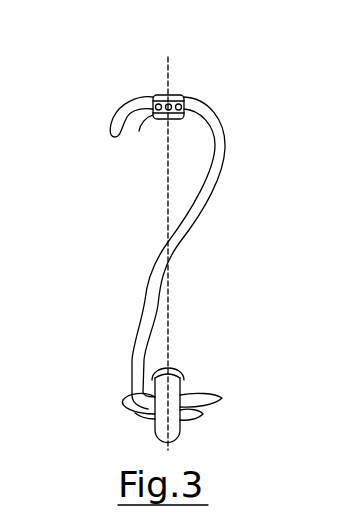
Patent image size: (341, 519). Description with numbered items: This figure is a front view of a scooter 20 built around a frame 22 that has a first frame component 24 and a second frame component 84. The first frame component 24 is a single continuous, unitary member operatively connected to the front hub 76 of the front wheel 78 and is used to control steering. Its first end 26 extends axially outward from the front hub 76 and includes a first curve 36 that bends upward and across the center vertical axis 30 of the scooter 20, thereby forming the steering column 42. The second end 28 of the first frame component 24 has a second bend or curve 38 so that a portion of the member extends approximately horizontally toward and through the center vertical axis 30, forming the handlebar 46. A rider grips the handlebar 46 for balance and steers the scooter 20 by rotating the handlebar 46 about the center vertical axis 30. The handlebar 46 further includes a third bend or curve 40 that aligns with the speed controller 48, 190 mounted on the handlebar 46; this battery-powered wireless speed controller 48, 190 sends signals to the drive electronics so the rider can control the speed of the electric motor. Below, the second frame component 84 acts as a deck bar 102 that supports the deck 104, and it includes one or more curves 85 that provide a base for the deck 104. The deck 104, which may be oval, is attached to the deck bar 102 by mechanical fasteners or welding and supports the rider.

The scooter 20 is at (249, 107).
The frame 22 is at (164, 253).
The first frame component 24 is at (169, 253).
The first end 26 is at (99, 408).
The second end 28 is at (183, 224).
The center vertical axis 30 is at (169, 82).
The first curve 36 is at (127, 376).
The second bend or curve 38 is at (160, 253).
The third bend or curve 40 is at (125, 103).
The steering column 42 is at (160, 253).
The handlebar 46 is at (169, 224).
The speed controller 48 is at (147, 75).
The speed controller 190 is at (163, 95).
The front hub 76 is at (152, 422).
The front wheel 78 is at (184, 385).
The second frame component 84 is at (198, 410).
The curves 85 is at (208, 412).
The deck bar 102 is at (198, 414).
The deck 104 is at (239, 380).